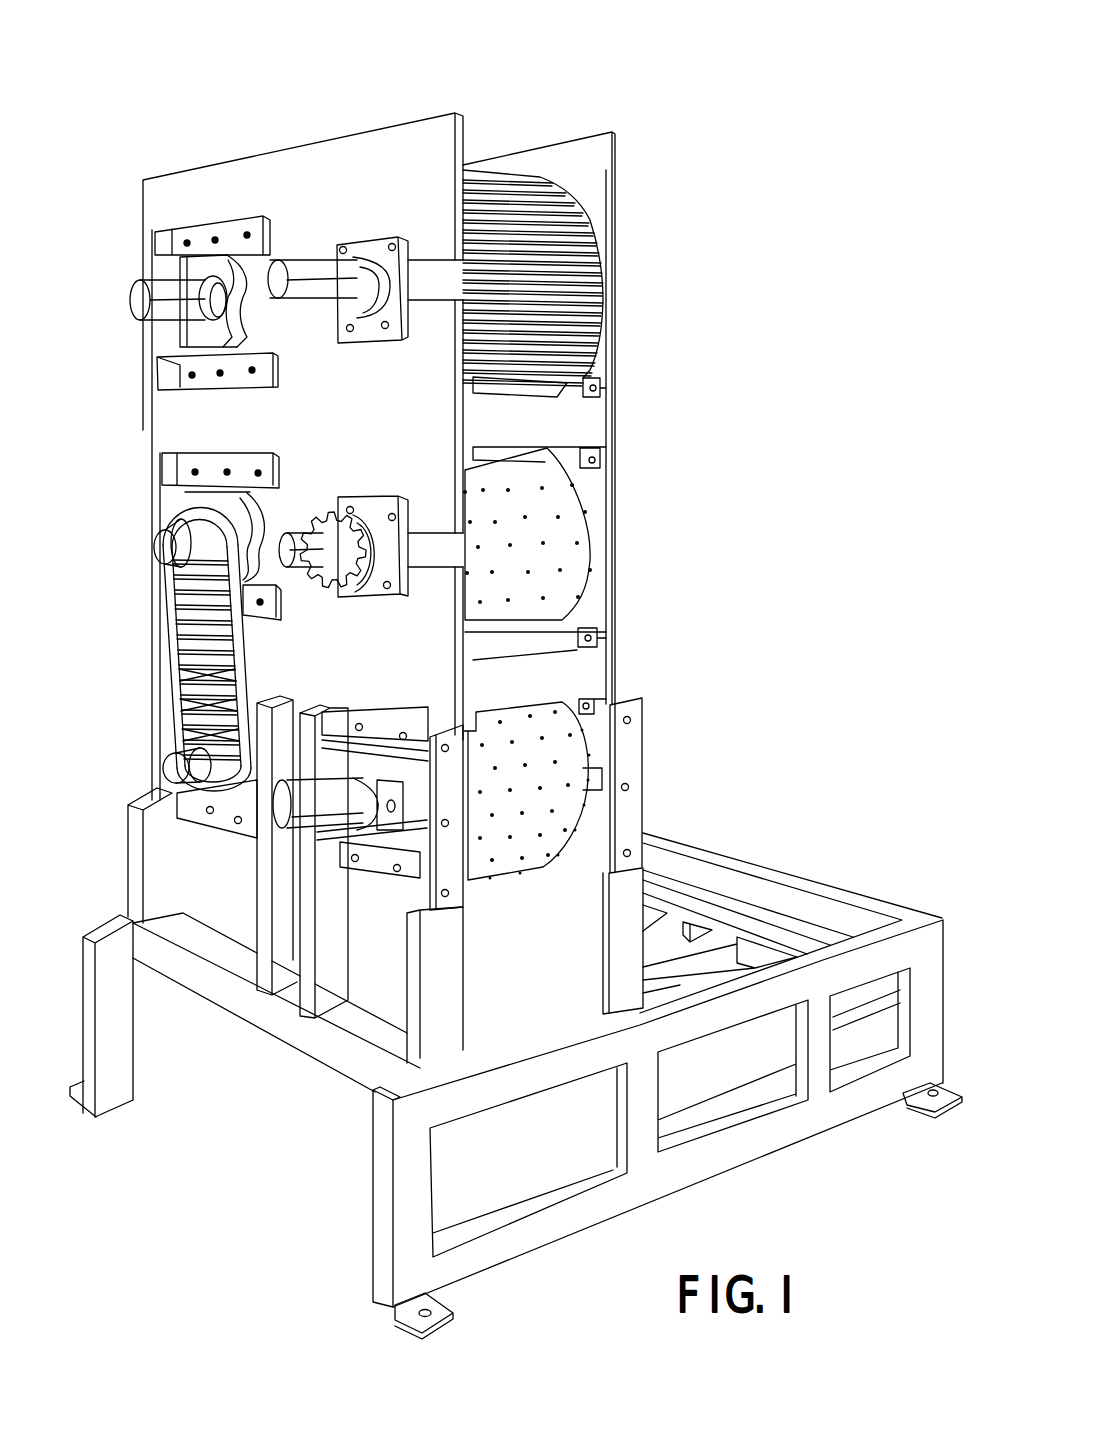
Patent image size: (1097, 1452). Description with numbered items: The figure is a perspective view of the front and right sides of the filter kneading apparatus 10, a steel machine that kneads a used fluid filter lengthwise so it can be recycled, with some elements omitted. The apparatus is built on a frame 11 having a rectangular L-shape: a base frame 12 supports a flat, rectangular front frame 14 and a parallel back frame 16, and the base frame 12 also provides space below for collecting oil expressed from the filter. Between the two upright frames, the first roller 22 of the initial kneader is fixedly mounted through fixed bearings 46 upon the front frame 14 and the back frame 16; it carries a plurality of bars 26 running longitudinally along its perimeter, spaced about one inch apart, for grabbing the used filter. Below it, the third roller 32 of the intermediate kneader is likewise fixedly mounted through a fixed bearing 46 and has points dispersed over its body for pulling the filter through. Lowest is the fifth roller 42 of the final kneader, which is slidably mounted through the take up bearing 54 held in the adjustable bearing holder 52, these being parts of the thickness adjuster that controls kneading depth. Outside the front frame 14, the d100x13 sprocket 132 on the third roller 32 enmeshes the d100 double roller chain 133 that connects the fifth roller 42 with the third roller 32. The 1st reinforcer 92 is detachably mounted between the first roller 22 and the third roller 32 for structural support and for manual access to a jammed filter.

The filter kneading apparatus 10 is at (767, 91).
The frame 11 is at (170, 175).
The base frame 12 is at (927, 938).
The front frame 14 is at (353, 158).
The back frame 16 is at (598, 155).
The first roller 22 is at (590, 297).
The bar 26 is at (585, 252).
The third roller 32 is at (560, 537).
The fifth roller 42 is at (550, 787).
The fixed bearings 46 is at (373, 245).
The adjustable bearing holder 52 is at (160, 236).
The take up bearing 54 is at (365, 830).
The 1st reinforcer 92 is at (540, 420).
The d100x13 sprocket 132 is at (325, 530).
The d100 double roller chain 133 is at (160, 628).